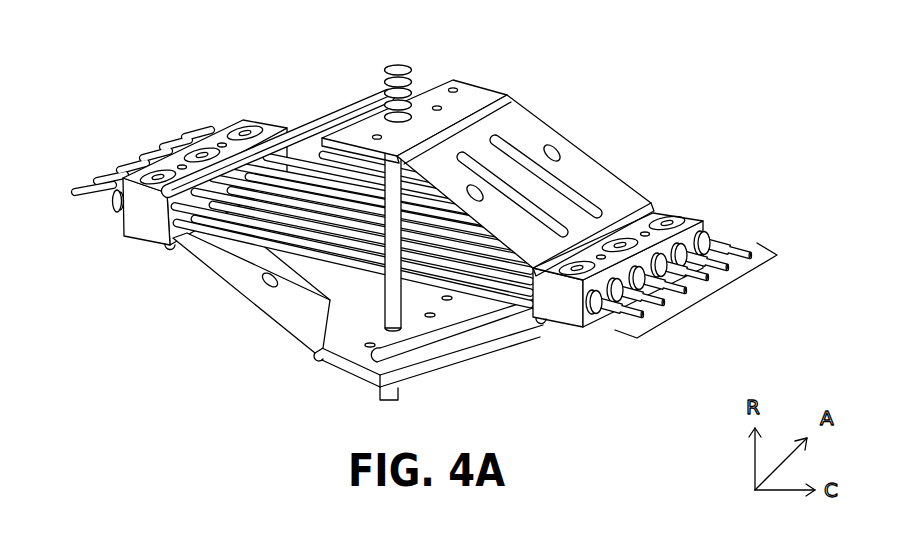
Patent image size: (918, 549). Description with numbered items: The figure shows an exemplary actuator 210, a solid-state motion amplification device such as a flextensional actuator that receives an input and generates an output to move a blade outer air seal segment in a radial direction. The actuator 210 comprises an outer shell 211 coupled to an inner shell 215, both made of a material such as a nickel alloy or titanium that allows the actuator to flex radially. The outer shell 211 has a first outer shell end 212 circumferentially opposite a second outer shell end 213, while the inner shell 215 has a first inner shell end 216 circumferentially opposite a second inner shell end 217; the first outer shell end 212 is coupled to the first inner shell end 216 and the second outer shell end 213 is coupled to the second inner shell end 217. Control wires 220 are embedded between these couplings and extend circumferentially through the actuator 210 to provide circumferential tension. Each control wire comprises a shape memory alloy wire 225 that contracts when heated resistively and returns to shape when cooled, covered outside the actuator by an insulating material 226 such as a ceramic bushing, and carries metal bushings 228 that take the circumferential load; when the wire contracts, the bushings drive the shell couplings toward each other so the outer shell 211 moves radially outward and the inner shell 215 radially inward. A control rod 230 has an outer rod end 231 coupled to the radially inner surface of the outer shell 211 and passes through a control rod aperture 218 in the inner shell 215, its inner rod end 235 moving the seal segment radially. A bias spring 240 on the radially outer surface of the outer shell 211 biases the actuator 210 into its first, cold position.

The actuator 210 is at (681, 76).
The outer shell 211 is at (340, 114).
The first outer shell end 212 is at (222, 140).
The second outer shell end 213 is at (697, 218).
The inner shell 215 is at (253, 306).
The first inner shell end 216 is at (143, 232).
The second inner shell end 217 is at (565, 328).
The control rod aperture 218 is at (366, 345).
The control wires 220 is at (710, 297).
The shape memory alloy (SMA) wire 225 is at (143, 160).
The insulating material 226 is at (100, 196).
The metal bushing 228 is at (117, 213).
The control rod 230 is at (392, 290).
The outer rod end 231 is at (446, 115).
The inner rod end 235 is at (391, 388).
The bias spring 240 is at (384, 78).